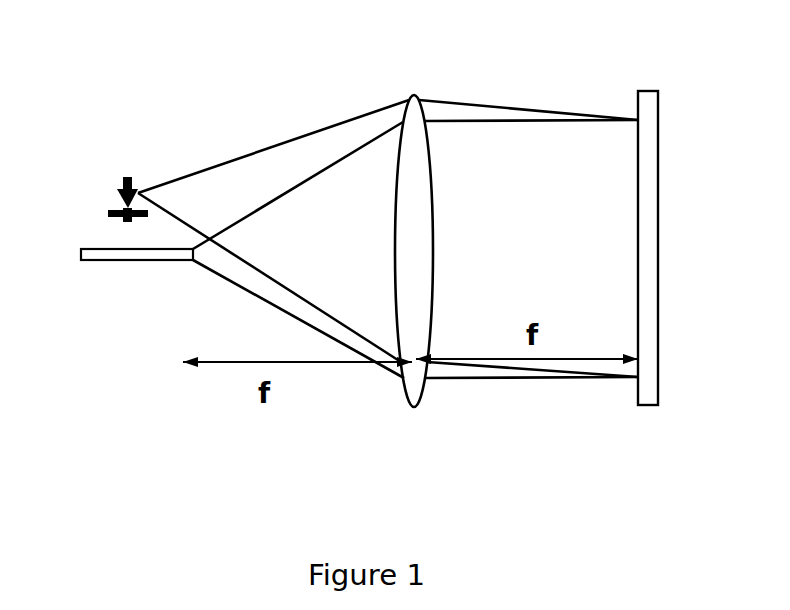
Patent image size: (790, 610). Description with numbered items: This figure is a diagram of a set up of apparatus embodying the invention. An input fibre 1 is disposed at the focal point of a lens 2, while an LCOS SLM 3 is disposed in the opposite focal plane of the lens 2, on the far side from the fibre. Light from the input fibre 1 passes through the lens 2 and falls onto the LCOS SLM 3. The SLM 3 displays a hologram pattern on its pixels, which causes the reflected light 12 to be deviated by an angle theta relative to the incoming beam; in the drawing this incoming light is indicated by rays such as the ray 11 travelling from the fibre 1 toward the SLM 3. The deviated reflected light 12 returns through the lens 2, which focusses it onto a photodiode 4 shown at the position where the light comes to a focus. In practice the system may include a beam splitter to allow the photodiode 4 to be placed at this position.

The input fibre 1 is at (147, 260).
The lens 2 is at (403, 397).
The LCOS SLM 3 is at (648, 395).
The photodiode 4 is at (138, 175).
The light ray from fiber end 11 is at (275, 202).
The reflected light 12 is at (497, 110).